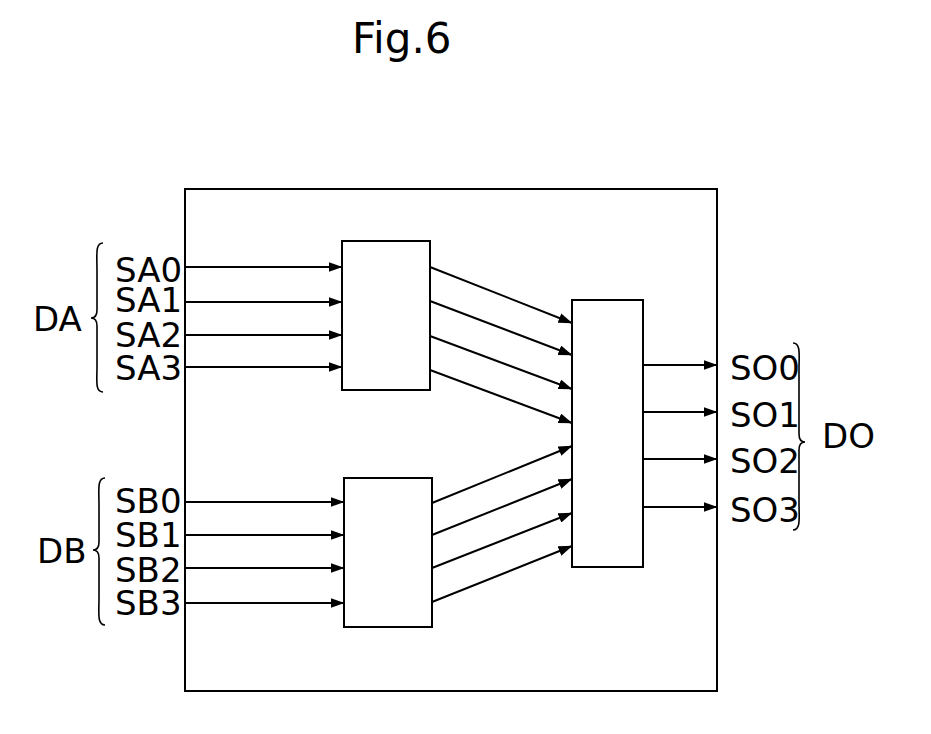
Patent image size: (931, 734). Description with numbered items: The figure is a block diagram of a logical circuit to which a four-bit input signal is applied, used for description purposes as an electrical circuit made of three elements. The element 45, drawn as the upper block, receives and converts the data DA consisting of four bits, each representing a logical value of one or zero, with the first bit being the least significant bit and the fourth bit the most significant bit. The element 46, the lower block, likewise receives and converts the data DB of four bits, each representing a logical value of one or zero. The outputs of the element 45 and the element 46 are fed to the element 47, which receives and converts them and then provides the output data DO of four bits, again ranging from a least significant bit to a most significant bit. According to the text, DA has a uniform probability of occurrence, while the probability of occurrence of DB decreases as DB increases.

The element 45 is at (397, 241).
The element 46 is at (432, 613).
The element 47 is at (612, 300).